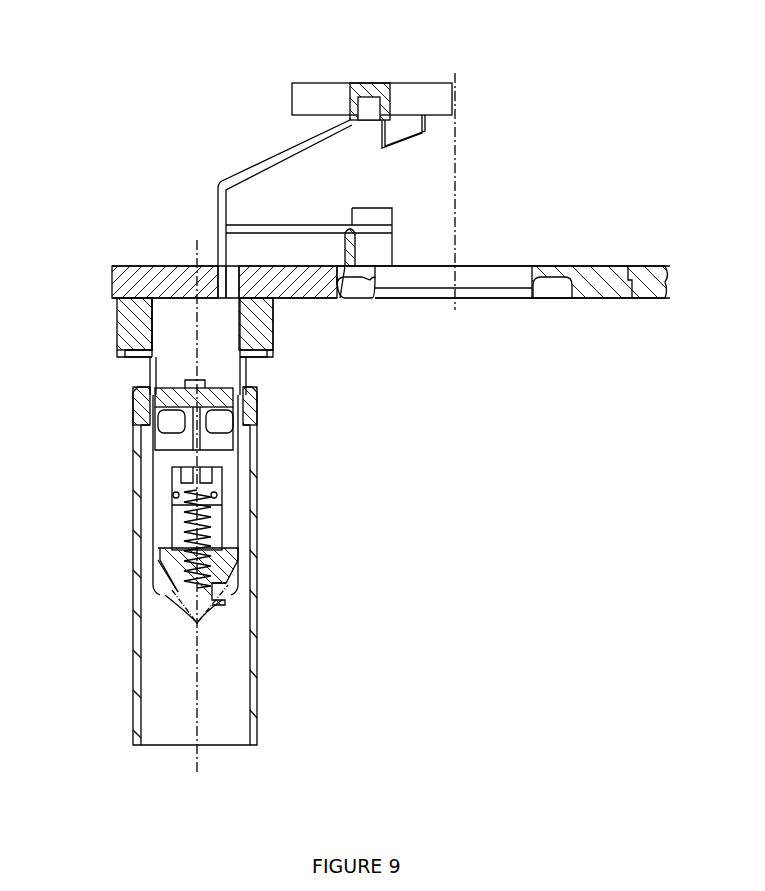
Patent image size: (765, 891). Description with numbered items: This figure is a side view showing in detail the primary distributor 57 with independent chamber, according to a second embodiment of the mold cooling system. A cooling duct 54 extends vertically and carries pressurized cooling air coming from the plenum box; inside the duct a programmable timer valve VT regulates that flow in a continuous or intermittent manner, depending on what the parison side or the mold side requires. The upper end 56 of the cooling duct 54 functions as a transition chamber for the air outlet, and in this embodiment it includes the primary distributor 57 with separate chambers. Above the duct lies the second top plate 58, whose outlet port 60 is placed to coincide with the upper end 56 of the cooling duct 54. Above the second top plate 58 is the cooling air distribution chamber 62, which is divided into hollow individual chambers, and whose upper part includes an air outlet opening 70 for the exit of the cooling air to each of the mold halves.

The cooling duct 54 is at (253, 604).
The upper end 56 is at (150, 379).
The primary distributor 57 is at (132, 322).
The second top plate 58 is at (158, 282).
The outlet port 60 is at (228, 282).
The cooling air distribution chamber 62 is at (252, 168).
The air outlet opening 70 is at (367, 108).
The timer valve VT is at (175, 583).